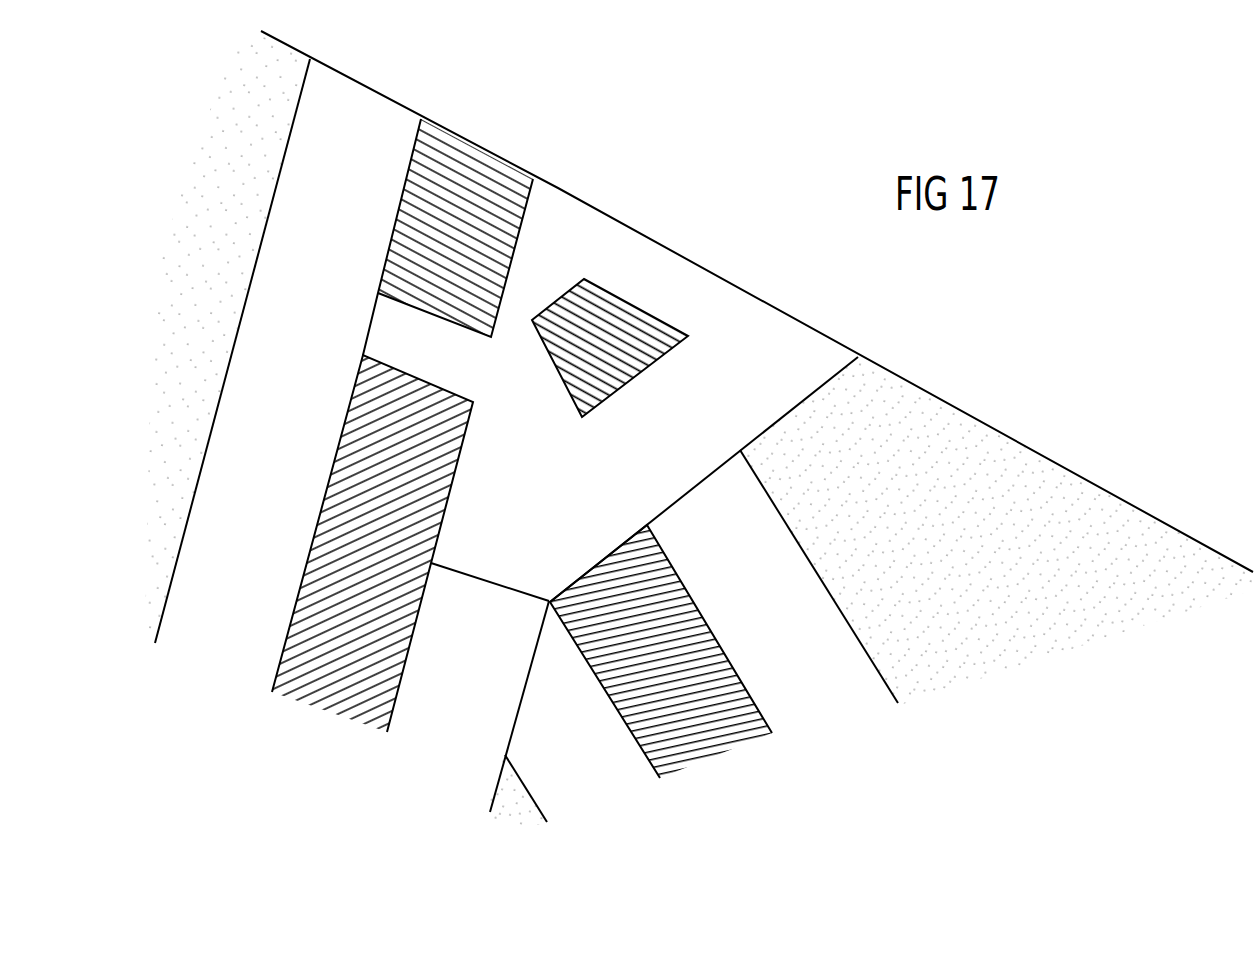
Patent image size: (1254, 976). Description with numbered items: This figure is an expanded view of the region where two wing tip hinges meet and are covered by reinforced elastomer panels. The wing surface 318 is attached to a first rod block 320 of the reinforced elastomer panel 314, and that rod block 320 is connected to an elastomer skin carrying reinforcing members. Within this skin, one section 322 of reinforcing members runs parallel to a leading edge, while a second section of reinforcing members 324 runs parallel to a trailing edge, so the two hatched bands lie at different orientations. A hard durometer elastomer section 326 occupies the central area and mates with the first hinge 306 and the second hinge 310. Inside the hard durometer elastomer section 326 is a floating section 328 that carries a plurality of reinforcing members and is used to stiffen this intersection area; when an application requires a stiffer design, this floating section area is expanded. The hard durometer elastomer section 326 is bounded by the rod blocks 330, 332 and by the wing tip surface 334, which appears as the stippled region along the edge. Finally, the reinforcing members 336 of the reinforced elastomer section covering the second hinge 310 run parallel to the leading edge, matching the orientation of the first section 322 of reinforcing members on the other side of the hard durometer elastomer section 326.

The first hinge 306 is at (521, 125).
The second hinge 310 is at (767, 761).
The reinforced elastomer panel 314 is at (192, 732).
The wing surface 318 is at (231, 179).
The first rod block 320 is at (315, 369).
The section of reinforcing members 322 is at (317, 602).
The second section of reinforcing members 324 is at (508, 203).
The hard durometer elastomer section 326 is at (578, 497).
The floating section 328 is at (652, 328).
The rod block 330 is at (491, 664).
The rod block 332 is at (768, 600).
The wing tip surface 334 is at (943, 531).
The reinforcing members 336 is at (733, 705).